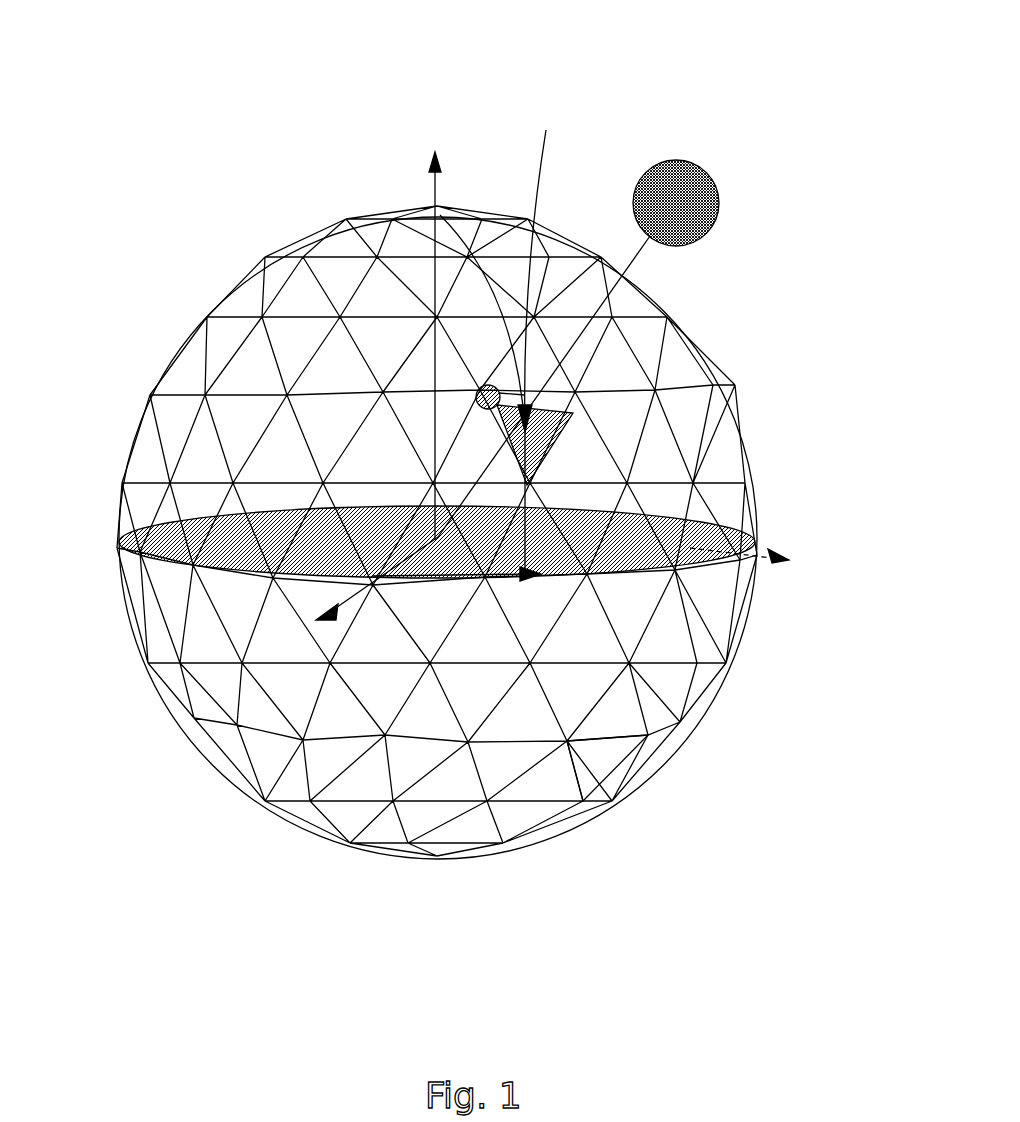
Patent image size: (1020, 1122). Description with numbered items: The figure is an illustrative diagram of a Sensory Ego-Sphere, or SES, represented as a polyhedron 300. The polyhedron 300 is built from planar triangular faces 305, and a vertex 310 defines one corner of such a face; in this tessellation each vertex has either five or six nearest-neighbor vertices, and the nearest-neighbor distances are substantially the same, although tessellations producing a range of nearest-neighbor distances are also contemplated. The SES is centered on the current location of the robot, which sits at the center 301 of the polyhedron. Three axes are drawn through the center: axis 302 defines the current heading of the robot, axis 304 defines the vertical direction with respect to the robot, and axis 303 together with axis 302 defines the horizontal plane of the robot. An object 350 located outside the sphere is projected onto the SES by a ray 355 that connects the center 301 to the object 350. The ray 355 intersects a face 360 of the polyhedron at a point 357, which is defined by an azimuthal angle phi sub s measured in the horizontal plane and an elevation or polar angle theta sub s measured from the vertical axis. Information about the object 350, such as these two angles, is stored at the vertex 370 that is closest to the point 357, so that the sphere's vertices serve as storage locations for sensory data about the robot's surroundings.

The polyhedron 300 is at (473, 882).
The center 301 is at (438, 537).
The axis 302 is at (340, 616).
The axis 303 is at (787, 563).
The axis 304 is at (435, 197).
The planar triangular face 305 is at (598, 762).
The vertex 310 is at (310, 252).
The object 350 is at (718, 183).
The ray 355 is at (640, 263).
The point 357 is at (485, 366).
The face 360 is at (560, 428).
The vertex 370 is at (478, 392).